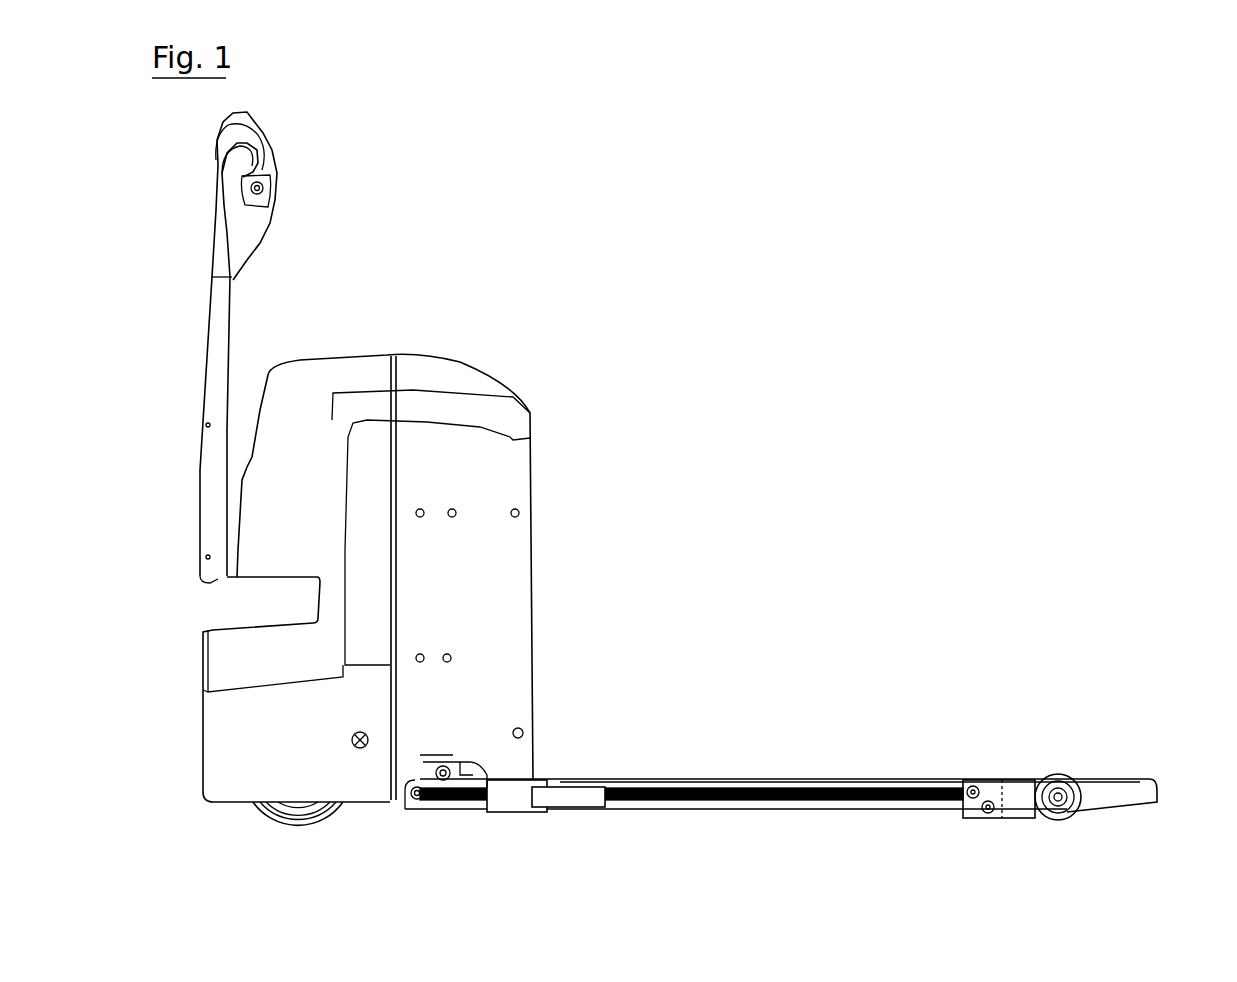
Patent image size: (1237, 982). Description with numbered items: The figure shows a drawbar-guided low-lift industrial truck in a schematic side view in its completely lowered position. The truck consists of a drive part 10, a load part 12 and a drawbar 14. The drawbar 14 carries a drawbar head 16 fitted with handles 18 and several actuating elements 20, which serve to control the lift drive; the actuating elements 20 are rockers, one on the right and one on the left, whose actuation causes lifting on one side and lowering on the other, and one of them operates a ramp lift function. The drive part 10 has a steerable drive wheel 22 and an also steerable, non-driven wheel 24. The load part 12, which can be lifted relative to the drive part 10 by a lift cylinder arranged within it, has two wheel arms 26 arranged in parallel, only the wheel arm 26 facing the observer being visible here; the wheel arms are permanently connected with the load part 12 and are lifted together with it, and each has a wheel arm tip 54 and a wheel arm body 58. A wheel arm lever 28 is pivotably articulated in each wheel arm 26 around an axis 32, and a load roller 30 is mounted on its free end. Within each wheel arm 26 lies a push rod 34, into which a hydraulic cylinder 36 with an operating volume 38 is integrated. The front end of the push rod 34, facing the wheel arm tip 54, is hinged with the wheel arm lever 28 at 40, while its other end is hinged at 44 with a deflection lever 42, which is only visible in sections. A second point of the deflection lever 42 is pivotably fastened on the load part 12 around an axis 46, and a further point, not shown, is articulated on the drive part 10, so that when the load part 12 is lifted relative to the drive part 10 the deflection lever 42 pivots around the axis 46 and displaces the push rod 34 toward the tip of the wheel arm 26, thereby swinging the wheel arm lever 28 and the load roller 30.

The drive part 10 is at (345, 298).
The load part 12 is at (495, 339).
The drawbar 14 is at (180, 327).
The drawbar head 16 is at (293, 160).
The handles 18 is at (247, 197).
The actuating elements 20 is at (266, 196).
The drive wheel 22 is at (327, 818).
The wheel 24 is at (280, 823).
The wheel arm 26 is at (900, 657).
The wheel arm lever 28 is at (1017, 805).
The load roller 30 is at (1070, 815).
The axis 32 is at (988, 812).
The push rod 34 is at (692, 787).
The hydraulic cylinder 36 is at (543, 818).
The operating volume 38 is at (512, 793).
The hinge point 40 is at (975, 788).
The deflection lever 42 is at (405, 792).
The hinge point 44 is at (420, 800).
The axis 46 is at (448, 770).
The wheel arm tip 54 is at (1137, 780).
The wheel arm body 58 is at (797, 778).